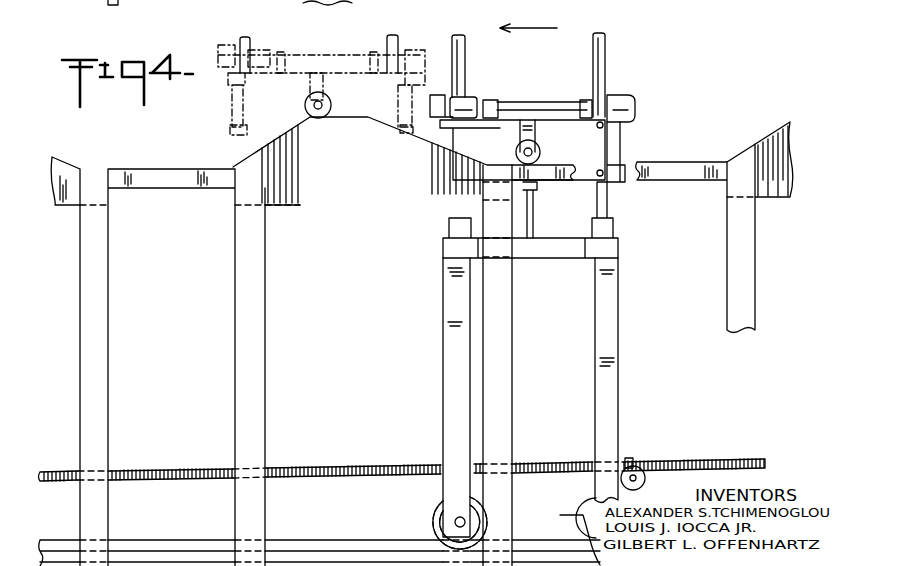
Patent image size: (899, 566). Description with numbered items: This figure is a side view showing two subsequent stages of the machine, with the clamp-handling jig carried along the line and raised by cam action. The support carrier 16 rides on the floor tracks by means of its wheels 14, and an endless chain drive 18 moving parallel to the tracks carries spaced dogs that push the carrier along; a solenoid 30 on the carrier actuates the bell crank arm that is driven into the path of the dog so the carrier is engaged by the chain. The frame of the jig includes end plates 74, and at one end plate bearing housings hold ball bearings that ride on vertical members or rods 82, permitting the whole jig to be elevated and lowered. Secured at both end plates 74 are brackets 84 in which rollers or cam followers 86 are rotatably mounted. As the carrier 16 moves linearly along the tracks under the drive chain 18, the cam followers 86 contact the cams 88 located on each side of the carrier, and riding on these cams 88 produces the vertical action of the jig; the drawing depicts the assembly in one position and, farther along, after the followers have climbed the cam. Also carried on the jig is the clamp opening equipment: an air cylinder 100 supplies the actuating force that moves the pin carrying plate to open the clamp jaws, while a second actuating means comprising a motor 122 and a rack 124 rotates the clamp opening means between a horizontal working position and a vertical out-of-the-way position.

The wheels 14 is at (440, 515).
The support carrier 16 is at (443, 289).
The endless chain drive 18 is at (712, 460).
The solenoid 30 is at (660, 463).
The end plates 74 is at (490, 153).
The vertical members or rods 82 is at (252, 38).
The brackets 84 is at (326, 88).
The cam followers 86 is at (76, 150).
The cams 88 is at (305, 106).
The air cylinder 100 is at (410, 50).
The motor 122 is at (262, 52).
The rack 124 is at (218, 52).